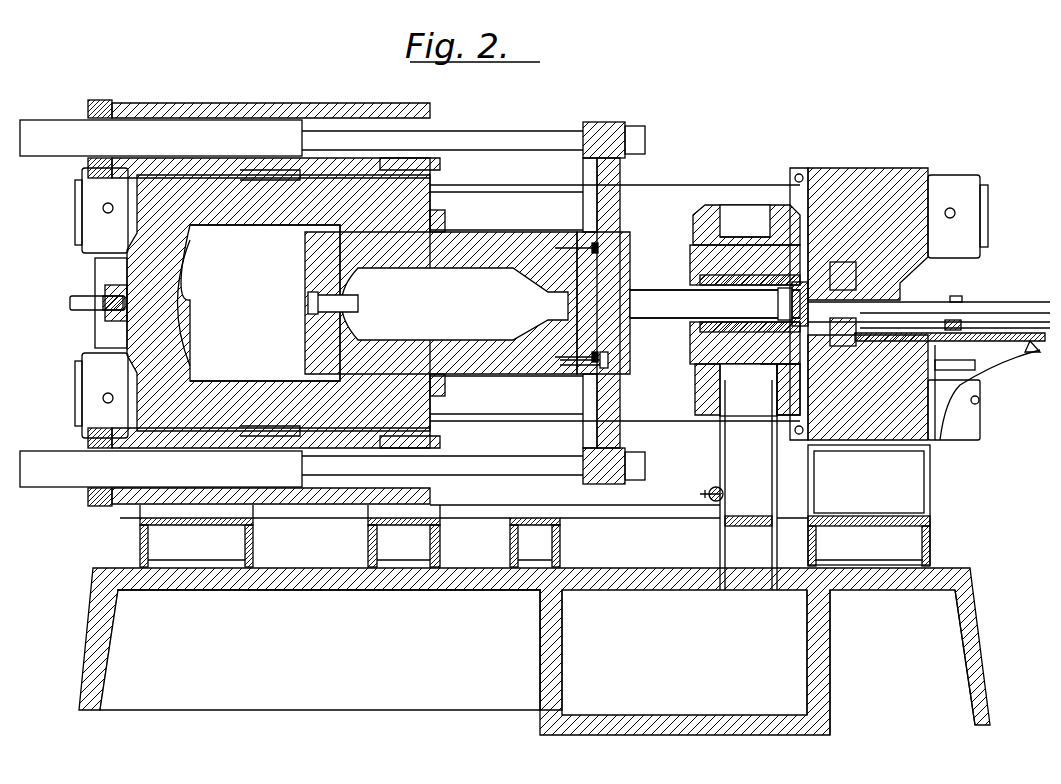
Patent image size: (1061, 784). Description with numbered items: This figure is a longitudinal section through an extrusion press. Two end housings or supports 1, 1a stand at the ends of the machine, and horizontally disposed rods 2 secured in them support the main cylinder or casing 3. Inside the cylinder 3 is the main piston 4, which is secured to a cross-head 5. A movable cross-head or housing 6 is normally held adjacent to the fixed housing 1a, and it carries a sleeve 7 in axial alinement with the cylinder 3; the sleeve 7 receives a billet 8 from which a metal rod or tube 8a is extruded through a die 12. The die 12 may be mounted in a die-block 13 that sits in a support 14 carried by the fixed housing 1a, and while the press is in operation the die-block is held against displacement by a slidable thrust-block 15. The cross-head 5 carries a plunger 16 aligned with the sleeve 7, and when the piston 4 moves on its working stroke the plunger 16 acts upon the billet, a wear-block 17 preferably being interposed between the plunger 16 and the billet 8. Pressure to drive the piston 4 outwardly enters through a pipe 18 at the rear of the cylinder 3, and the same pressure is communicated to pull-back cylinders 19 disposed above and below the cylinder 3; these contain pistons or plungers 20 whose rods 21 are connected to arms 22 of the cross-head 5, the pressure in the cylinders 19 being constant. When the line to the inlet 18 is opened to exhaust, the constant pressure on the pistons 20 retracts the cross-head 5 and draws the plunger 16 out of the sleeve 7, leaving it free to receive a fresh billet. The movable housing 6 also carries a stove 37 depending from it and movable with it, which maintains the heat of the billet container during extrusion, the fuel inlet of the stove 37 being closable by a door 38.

The end housing 1 is at (856, 486).
The end housing 1a is at (534, 440).
The rods 2 is at (615, 303).
The cylinder 3 is at (245, 212).
The main piston 4 is at (476, 240).
The cross-head 5 is at (618, 362).
The movable cross-head or housing 6 is at (690, 345).
The sleeve 7 is at (690, 275).
The billet 8 is at (792, 300).
The extruded rod or tube 8a is at (998, 305).
The die 12 is at (778, 305).
The die-block 13 is at (777, 357).
The support 14 is at (856, 332).
The thrust-block 15 is at (856, 285).
The plunger 16 is at (715, 304).
The wear-block 17 is at (747, 390).
The pipe 18 is at (86, 296).
The pull-back cylinders 19 is at (258, 104).
The pistons 20 is at (161, 303).
The rods 21 is at (490, 140).
The arms 22 is at (628, 160).
The stove 37 is at (748, 481).
The door 38 is at (706, 490).